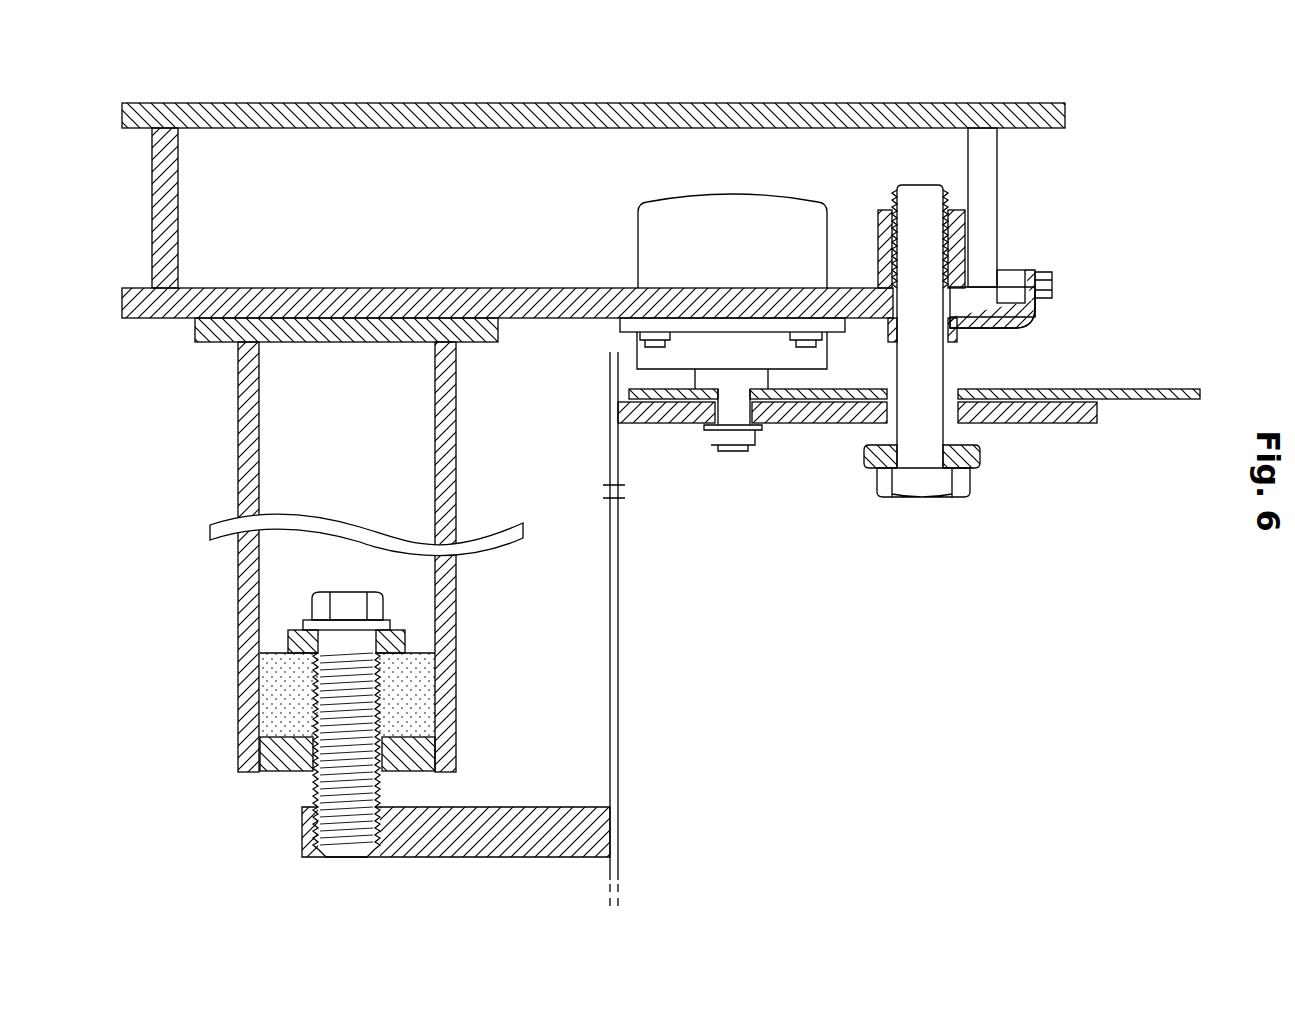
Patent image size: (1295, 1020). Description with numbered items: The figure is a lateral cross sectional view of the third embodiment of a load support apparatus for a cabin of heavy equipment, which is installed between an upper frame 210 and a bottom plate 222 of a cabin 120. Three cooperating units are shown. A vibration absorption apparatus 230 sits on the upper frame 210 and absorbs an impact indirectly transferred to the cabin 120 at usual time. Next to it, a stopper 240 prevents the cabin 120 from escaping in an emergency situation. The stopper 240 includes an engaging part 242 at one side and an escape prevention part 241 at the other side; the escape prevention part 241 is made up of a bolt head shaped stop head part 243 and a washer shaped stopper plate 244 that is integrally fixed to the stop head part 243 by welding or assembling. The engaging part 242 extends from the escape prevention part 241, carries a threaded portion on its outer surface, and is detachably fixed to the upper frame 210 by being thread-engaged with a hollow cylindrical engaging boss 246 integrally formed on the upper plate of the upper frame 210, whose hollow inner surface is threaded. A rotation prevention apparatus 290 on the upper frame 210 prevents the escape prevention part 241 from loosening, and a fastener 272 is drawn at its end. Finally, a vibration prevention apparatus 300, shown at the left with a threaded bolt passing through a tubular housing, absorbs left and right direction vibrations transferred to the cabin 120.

The cabin 120 is at (620, 607).
The upper frame 210 is at (165, 310).
The bottom plate 222 is at (1040, 422).
The vibration absorption apparatus 230 is at (677, 212).
The stopper 240 is at (978, 334).
The escape prevention part 241 is at (988, 597).
The engaging part 242 is at (935, 191).
The stop head part 243 is at (926, 492).
The stopper plate 244 is at (980, 462).
The engaging boss 246 is at (876, 210).
The nut 272 is at (1056, 285).
The rotation prevention apparatus 290 is at (1031, 228).
The vibration prevention apparatus 300 is at (250, 813).